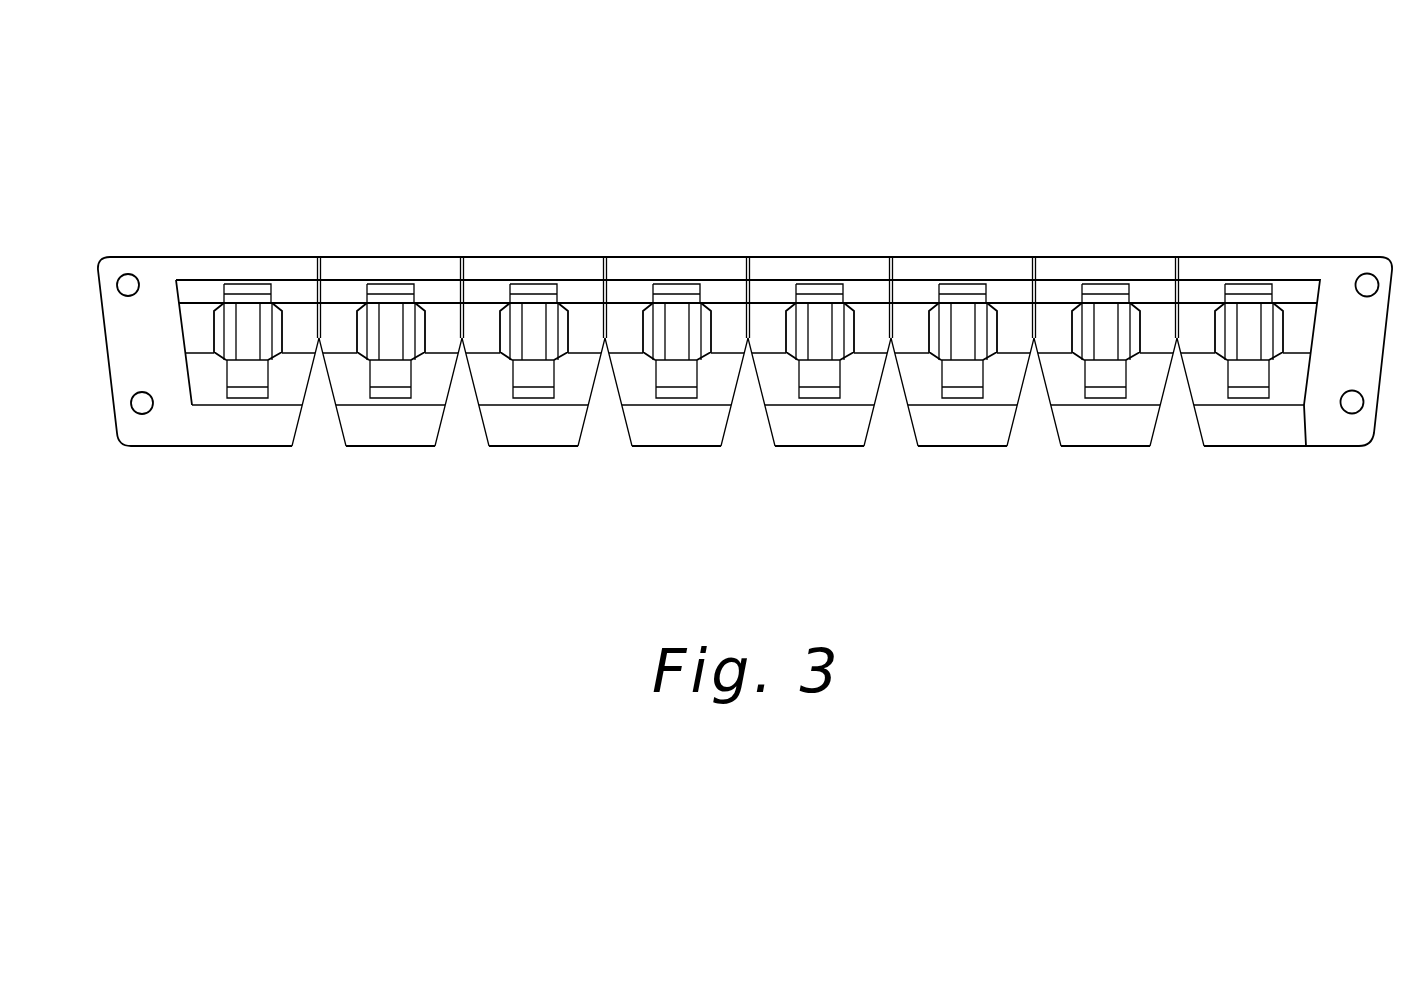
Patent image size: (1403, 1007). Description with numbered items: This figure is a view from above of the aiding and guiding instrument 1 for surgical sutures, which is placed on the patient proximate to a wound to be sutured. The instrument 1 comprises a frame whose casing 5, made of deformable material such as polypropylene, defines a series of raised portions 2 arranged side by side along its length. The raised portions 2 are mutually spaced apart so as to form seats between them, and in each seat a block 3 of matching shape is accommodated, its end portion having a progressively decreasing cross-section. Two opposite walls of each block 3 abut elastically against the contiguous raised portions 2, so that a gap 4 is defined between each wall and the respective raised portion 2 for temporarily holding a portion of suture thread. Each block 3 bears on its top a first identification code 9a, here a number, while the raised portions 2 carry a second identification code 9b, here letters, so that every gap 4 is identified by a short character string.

The aiding and guiding instrument for surgical sutures 1 is at (909, 160).
The raised portions 2 is at (222, 378).
The blocks 3 is at (252, 373).
The gap 4 is at (284, 316).
The casing 5 is at (514, 244).
The first identification code 9a is at (245, 297).
The second identification code 9b is at (735, 425).